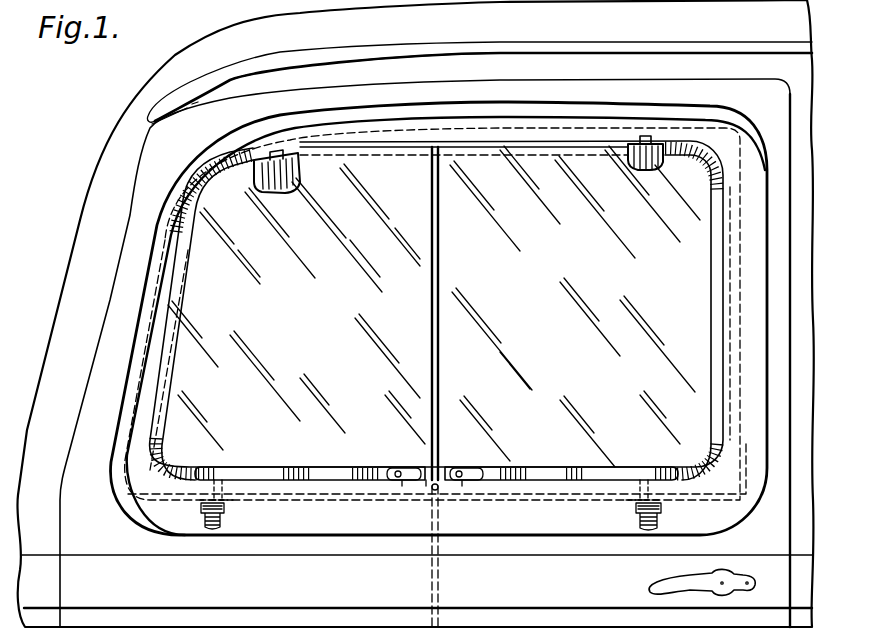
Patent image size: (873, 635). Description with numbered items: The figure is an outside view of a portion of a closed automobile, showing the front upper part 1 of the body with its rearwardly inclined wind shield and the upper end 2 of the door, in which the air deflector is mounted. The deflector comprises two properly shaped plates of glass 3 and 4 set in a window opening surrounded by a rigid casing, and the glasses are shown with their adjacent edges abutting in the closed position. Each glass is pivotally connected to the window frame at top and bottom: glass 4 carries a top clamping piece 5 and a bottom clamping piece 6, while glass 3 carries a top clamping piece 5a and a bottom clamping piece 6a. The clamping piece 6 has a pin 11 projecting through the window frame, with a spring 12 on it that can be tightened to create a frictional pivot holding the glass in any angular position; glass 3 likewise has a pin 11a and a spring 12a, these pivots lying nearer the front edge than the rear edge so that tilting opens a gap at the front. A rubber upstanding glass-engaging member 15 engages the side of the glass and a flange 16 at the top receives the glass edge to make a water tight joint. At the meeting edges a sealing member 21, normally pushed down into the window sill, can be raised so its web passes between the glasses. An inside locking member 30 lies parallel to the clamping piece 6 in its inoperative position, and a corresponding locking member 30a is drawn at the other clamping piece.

The front upper part of the automobile closed body 1 is at (88, 190).
The upper end of the door 2 is at (112, 337).
The plate of glass 3 is at (410, 342).
The plate of glass 4 is at (514, 336).
The clamping piece 5 is at (648, 172).
The clamping piece 5a is at (287, 191).
The clamping piece 6 is at (587, 467).
The clamping piece 6a is at (300, 466).
The pin 11 is at (648, 484).
The pin 11a is at (220, 484).
The spring 12 is at (663, 518).
The spring 12a is at (226, 516).
The rubber upstanding glass-engaging member 15 is at (177, 470).
The flange 16 is at (513, 156).
The sealing member 21 is at (443, 576).
The locking member 30 is at (475, 465).
The hinge 30a is at (404, 467).